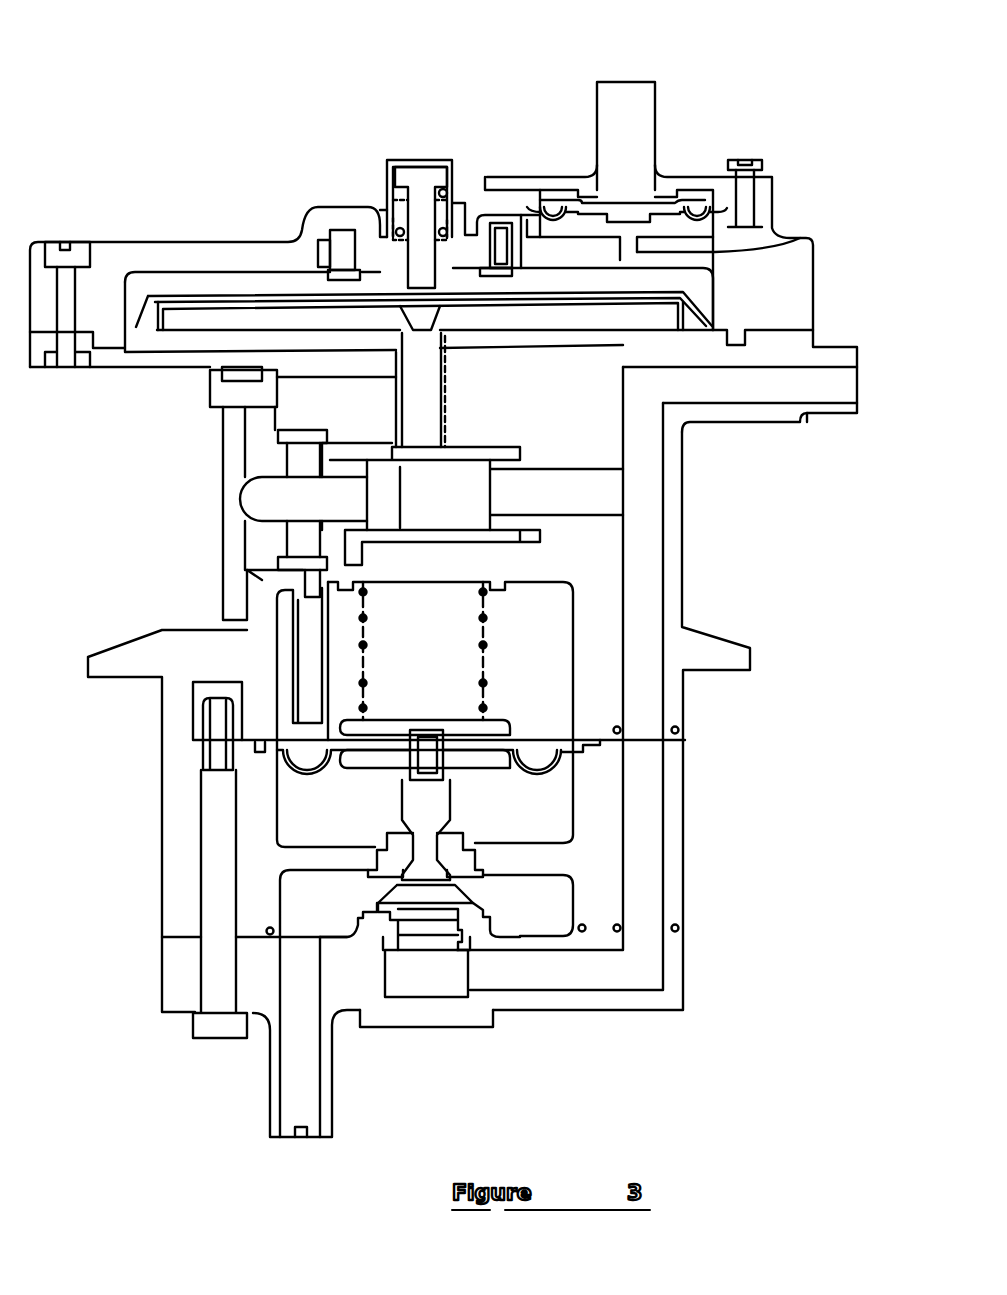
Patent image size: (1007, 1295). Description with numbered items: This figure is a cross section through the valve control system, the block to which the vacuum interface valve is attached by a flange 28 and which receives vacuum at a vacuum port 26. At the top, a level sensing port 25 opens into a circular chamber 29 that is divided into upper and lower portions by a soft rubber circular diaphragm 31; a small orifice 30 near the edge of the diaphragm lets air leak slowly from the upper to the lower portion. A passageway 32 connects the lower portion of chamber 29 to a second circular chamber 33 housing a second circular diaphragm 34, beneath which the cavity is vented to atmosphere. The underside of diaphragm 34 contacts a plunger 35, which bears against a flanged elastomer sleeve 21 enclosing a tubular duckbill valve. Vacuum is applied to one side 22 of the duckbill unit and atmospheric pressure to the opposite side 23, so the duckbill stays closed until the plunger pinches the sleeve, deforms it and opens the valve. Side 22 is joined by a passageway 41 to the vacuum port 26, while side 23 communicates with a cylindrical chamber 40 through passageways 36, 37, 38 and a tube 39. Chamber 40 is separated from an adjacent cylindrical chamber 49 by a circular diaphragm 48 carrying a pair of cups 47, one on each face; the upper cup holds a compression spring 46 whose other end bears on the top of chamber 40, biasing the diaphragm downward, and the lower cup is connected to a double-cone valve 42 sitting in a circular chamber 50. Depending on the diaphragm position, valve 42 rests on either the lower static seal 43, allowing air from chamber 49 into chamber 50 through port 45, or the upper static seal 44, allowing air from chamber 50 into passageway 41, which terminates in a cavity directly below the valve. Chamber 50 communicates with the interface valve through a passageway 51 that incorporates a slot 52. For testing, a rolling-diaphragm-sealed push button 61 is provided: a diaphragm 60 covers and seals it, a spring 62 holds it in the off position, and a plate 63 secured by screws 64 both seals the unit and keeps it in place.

The flanged elastomer sleeve 21 is at (470, 456).
The side of the duckbill valve unit 22 is at (520, 470).
The opposite side of the duckbill valve unit 23 is at (357, 487).
The level sensing port 25 is at (662, 78).
The vacuum port 26 is at (810, 420).
The flange 28 is at (750, 648).
The circular chamber 29 is at (700, 212).
The small orifice 30 is at (555, 212).
The soft rubber circular diaphragm 31 is at (630, 212).
The passageway 32 is at (777, 240).
The second circular chamber 33 is at (700, 290).
The second circular diaphragm 34 is at (700, 320).
The plunger 35 is at (432, 392).
The passageway 36 is at (273, 493).
The passageway 37 is at (302, 532).
The passageway 38 is at (313, 580).
The tube 39 is at (305, 658).
The cylindrical chamber 40 is at (555, 610).
The passageway 41 is at (645, 520).
The double-cone valve 42 is at (475, 903).
The lower static seal 43 is at (462, 952).
The upper static seal 44 is at (395, 838).
The port 45 is at (445, 838).
The compression spring 46 is at (483, 668).
The cups 47 is at (500, 722).
The circular diaphragm 48 is at (560, 767).
The cylindrical chamber 49 is at (305, 810).
The circular chamber 50 is at (310, 905).
The passageway 51 is at (295, 1062).
The slot 52 is at (301, 1140).
The diaphragm 60 is at (452, 182).
The push button 61 is at (428, 168).
The spring 62 is at (385, 190).
The plate 63 is at (355, 250).
The screws 64 is at (318, 268).